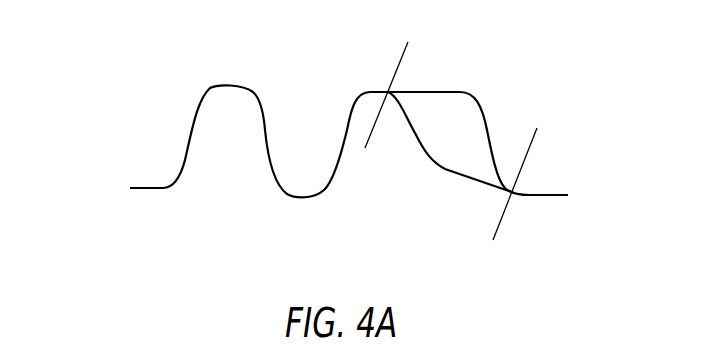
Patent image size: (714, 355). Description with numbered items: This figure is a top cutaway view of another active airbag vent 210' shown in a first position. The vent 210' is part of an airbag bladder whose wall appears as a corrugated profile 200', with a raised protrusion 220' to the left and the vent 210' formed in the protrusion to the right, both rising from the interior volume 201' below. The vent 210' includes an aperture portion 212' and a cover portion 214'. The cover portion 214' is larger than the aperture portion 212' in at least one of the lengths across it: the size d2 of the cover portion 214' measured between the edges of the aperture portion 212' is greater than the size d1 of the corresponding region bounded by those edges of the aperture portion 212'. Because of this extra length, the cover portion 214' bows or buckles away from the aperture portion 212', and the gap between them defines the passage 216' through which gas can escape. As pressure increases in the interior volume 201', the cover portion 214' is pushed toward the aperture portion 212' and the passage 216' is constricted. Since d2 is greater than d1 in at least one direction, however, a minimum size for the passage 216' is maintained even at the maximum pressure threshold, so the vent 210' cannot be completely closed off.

The corrugated structure 200' is at (331, 129).
The interior volume 201' is at (280, 172).
The protrusion (peak) 220' is at (245, 117).
The active vent 210' is at (473, 129).
The cover portion 214' is at (530, 121).
The passage 216' is at (431, 130).
The aperture portion 212' is at (445, 214).
The size of the region bounded by the edges of the aperture portion d1 is at (379, 128).
The size of the cover portion between the edges of the aperture portion d2 is at (403, 59).